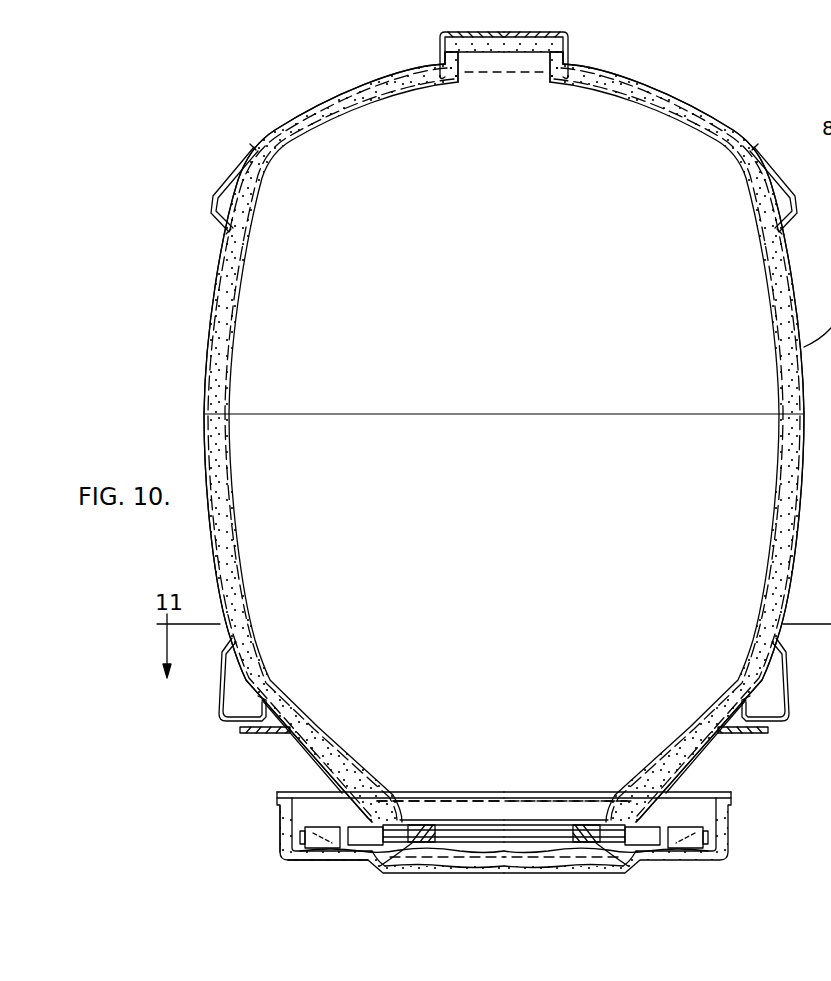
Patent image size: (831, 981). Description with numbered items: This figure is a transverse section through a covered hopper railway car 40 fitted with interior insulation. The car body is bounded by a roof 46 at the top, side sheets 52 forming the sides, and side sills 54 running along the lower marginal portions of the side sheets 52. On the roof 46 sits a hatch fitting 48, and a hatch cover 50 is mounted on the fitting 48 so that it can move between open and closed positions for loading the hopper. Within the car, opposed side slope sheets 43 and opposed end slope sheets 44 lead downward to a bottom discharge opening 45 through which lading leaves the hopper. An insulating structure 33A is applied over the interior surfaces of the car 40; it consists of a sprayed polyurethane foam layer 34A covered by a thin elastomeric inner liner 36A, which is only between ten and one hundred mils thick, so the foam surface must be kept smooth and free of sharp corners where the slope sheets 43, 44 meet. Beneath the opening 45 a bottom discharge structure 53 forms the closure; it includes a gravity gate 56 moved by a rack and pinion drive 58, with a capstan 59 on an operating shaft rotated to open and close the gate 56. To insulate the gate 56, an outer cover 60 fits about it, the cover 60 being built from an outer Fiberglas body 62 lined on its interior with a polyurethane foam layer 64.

The insulating structure 33A is at (240, 498).
The polyurethane foam layer 34A is at (524, 44).
The elastomeric inner liner 36A is at (233, 322).
The covered hopper railway car 40 is at (264, 114).
The side slope sheets 43 is at (313, 753).
The end slope sheets 44 is at (526, 620).
The bottom discharge opening 45 is at (513, 807).
The roof 46 is at (652, 85).
The hatch fitting 48 is at (566, 53).
The hatch cover 50 is at (562, 35).
The side sheets 52 is at (208, 332).
The bottom discharge structure 53 is at (478, 811).
The side sills 54 is at (216, 712).
The gravity gate 56 is at (560, 830).
The rack and pinion drive 58 is at (378, 870).
The capstan 59 is at (340, 830).
The outer cover 60 is at (738, 838).
The outer Fiberglas body 62 is at (283, 840).
The polyurethane foam layer 64 is at (330, 853).